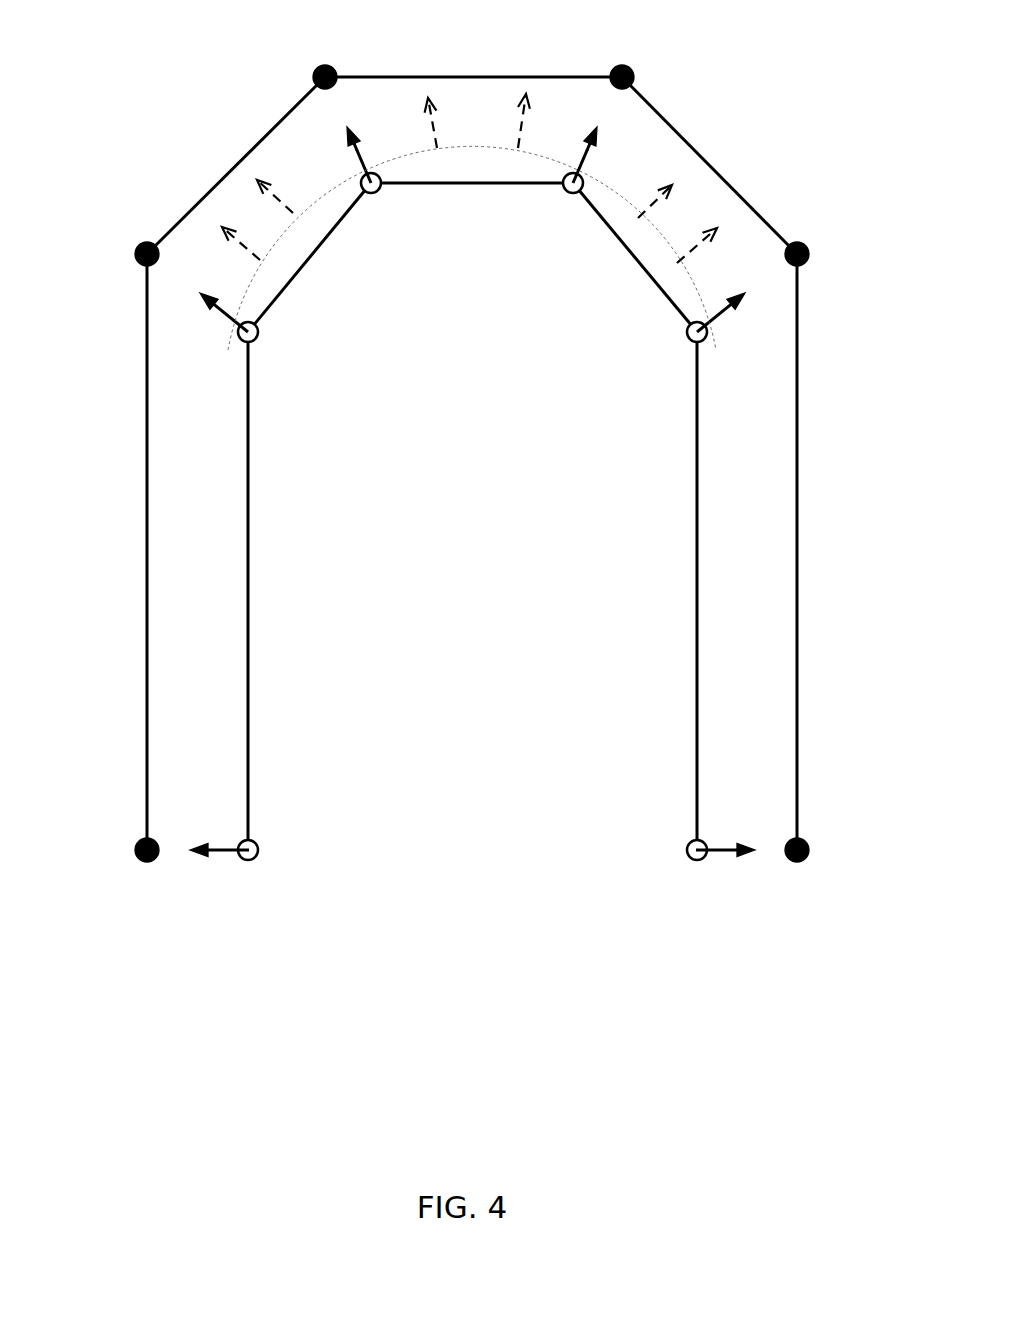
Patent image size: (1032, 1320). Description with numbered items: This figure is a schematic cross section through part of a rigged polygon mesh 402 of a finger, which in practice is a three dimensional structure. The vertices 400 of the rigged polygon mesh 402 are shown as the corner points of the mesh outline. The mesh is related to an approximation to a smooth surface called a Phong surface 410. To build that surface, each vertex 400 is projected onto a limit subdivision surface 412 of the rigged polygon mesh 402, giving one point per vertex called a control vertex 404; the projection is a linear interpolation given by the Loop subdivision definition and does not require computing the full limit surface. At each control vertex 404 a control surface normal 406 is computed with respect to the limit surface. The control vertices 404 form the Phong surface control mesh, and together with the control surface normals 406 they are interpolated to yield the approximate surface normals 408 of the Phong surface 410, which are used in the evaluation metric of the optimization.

The vertices 400 is at (316, 71).
The rigged polygon mesh 402 is at (798, 595).
The control vertices 404 is at (378, 192).
The control surface normals 406 is at (341, 137).
The approximate surface normals 408 is at (442, 118).
The Phong surface 410 is at (624, 257).
The limit subdivision surface 412 is at (320, 257).